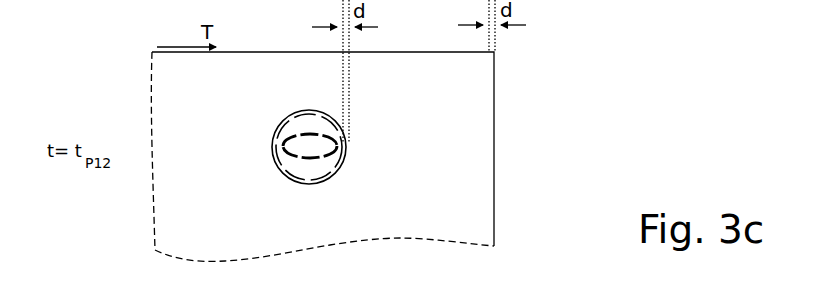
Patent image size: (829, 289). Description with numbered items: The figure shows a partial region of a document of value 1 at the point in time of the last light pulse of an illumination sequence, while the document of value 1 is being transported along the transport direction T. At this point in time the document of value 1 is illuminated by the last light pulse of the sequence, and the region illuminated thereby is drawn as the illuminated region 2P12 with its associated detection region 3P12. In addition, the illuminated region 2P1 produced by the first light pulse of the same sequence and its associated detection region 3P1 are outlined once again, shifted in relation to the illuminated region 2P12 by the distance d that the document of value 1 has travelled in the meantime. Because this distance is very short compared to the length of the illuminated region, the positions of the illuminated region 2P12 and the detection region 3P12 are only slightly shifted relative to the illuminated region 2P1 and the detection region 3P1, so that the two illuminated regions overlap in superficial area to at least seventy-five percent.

The document of value 1 is at (496, 203).
The illuminated region at point in time t_P12 2P12 is at (273, 140).
The detection region at point in time t_P12 3P12 is at (277, 155).
The illuminated region at point in time t_P1 2P1 is at (347, 138).
The detection region at point in time t_P1 3P1 is at (345, 153).